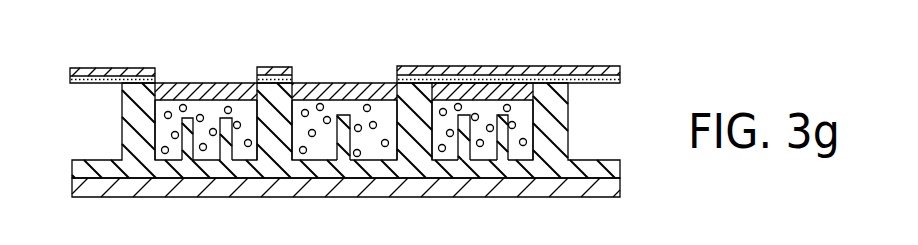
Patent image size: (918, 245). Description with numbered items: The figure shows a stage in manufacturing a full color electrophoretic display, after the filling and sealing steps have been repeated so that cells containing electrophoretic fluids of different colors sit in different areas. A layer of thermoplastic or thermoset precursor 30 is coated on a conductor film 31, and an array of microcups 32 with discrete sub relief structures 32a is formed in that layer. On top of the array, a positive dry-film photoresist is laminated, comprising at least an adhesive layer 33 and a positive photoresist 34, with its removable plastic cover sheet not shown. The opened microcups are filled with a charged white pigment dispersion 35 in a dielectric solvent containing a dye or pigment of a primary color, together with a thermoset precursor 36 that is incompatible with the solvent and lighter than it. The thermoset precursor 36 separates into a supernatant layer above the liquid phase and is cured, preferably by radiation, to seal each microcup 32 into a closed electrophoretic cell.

The thermoplastic or thermoset precursor 30 is at (563, 118).
The conductor film 31 is at (488, 182).
The microcups 32 is at (483, 101).
The discrete sub relief structures 32a is at (460, 114).
The adhesive layer 33 is at (87, 83).
The positive photoresist 34 is at (87, 68).
The charged white pigment dispersion 35 is at (203, 150).
The thermoset precursor 36 is at (215, 86).